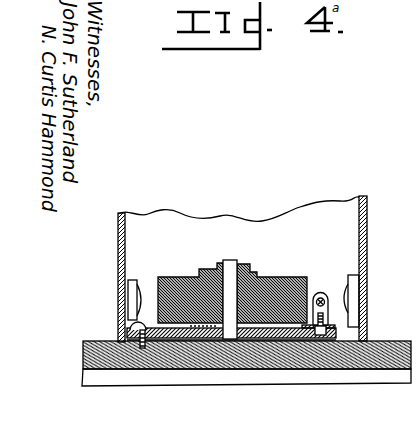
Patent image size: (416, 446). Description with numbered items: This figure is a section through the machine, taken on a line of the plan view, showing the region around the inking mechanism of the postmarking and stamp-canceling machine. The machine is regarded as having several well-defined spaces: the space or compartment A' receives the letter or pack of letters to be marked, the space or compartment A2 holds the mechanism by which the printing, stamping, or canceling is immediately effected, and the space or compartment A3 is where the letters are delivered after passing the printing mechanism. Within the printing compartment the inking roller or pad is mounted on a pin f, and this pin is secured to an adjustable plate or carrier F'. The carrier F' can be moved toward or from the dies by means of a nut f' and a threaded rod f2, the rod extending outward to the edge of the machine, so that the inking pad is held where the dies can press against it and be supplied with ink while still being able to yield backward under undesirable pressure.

The pin f is at (237, 285).
The adjustable plate or carrier F' is at (231, 333).
The nut f' is at (322, 297).
The threaded rod f2 is at (328, 311).
The space or compartment A3 is at (109, 277).
The space or compartment A' is at (375, 268).
The space or compartment A2 is at (303, 342).